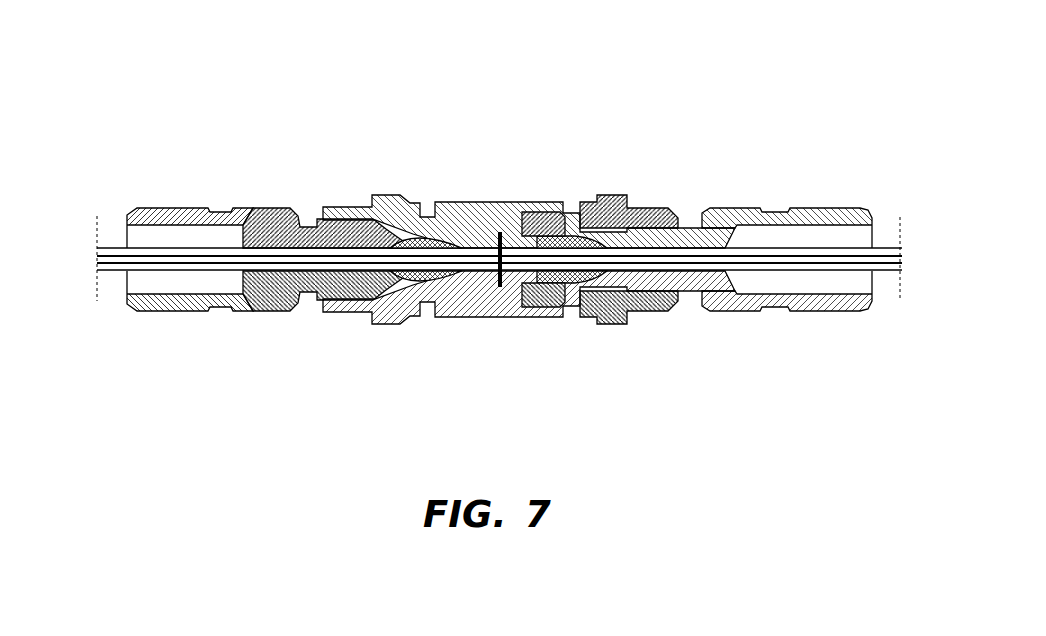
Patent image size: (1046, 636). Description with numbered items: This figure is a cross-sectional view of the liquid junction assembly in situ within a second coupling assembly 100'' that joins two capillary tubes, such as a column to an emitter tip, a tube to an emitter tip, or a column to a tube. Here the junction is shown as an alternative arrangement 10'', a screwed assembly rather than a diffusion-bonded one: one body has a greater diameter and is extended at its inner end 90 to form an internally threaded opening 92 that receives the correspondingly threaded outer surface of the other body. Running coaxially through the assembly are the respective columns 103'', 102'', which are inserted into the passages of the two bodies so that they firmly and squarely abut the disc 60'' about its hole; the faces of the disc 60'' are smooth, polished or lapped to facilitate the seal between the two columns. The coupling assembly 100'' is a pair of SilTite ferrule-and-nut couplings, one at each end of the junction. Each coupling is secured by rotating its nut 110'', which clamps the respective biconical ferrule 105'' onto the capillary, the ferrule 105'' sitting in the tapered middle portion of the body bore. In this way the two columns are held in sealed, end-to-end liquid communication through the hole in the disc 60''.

The coupling assembly 100'' is at (499, 206).
The alternative arrangement 10'' is at (529, 195).
The nuts 110'' is at (499, 225).
The column 103'' is at (284, 206).
The column 102'' is at (715, 205).
The extended inner end 90 is at (520, 226).
The internally threaded opening 92 is at (542, 308).
The disc 60'' is at (487, 310).
The biconical ferrule 105'' is at (629, 291).